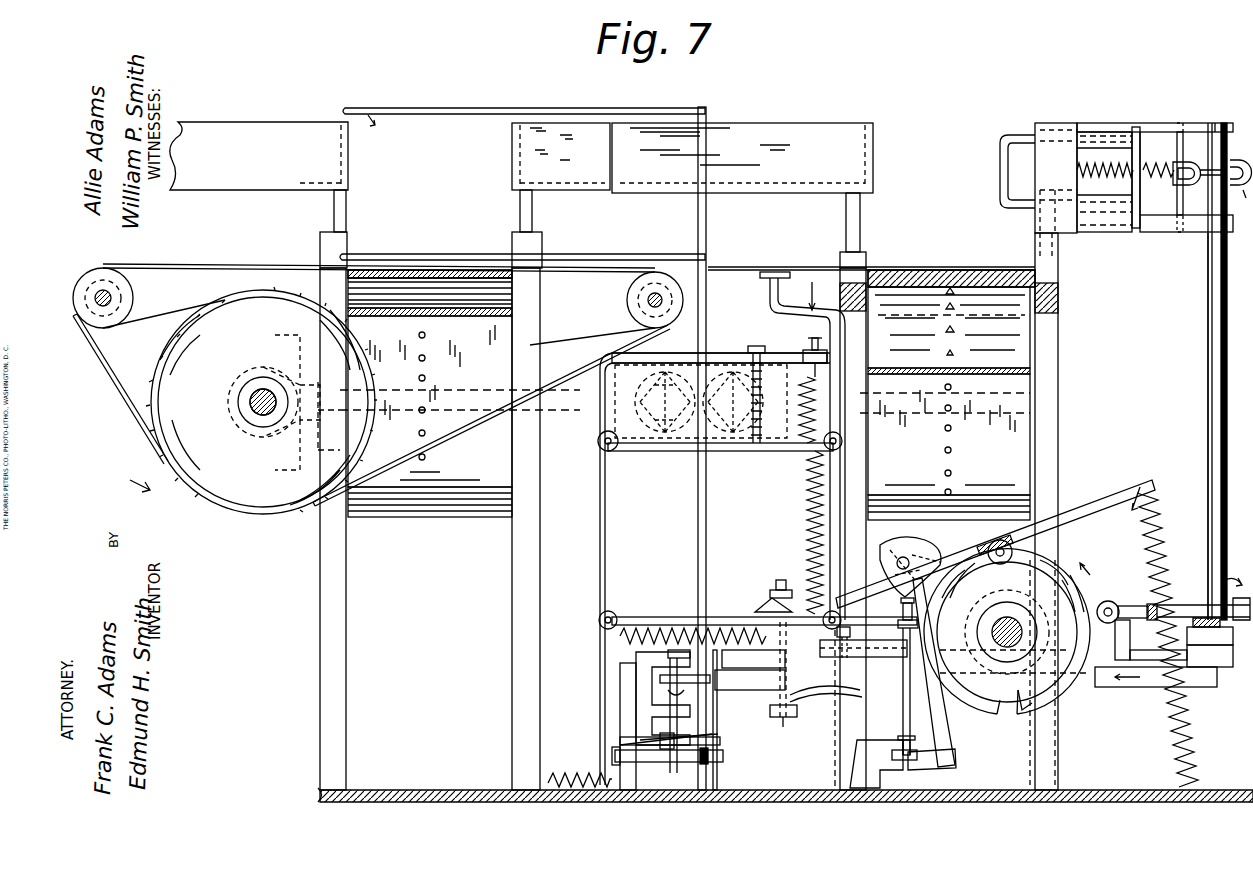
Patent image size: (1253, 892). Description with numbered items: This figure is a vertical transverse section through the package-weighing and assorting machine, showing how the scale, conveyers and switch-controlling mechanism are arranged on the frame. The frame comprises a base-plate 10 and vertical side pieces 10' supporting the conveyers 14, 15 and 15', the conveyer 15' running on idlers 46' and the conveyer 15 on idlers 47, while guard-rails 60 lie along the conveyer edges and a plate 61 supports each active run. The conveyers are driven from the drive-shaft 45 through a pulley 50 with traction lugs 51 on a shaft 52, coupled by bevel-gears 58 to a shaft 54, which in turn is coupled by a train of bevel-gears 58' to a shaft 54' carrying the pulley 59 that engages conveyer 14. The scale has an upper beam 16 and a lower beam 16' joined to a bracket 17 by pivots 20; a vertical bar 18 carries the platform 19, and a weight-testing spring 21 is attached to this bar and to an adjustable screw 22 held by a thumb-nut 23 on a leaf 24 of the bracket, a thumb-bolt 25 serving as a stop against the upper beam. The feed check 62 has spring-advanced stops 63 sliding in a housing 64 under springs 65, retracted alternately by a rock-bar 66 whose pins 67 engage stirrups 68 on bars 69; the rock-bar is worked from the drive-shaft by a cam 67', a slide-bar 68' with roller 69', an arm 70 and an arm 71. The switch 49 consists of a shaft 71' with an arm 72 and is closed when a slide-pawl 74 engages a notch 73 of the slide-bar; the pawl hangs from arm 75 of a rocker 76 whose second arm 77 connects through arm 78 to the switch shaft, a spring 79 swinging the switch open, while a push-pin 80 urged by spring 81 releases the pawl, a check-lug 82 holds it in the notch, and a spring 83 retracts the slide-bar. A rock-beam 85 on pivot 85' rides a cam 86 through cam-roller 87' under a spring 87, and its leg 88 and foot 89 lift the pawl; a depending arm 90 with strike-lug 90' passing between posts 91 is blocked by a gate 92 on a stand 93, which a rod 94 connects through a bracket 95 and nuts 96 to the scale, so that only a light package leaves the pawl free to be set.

The base-plate 10 is at (785, 784).
The vertical side pieces 10' is at (682, 490).
The conveyer 14 is at (975, 270).
The conveyer 15 is at (430, 273).
The conveyer 15' is at (430, 242).
The upper beam 16 is at (725, 454).
The lower beam 16' is at (764, 606).
The bracket 17 is at (606, 520).
The vertical bar 18 is at (770, 300).
The platform 19 is at (773, 270).
The pivots 20 is at (600, 441).
The weight-testing spring 21 is at (805, 485).
The adjustable screw 22 is at (810, 340).
The thumb-nut 23 is at (805, 380).
The leaf 24 is at (715, 358).
The thumb-bolt 25 is at (757, 345).
The drive-shaft 45 is at (1015, 615).
The idlers 46' is at (430, 269).
The idlers 47 is at (110, 292).
The switch 49 is at (706, 110).
The pulley 50 is at (248, 495).
The lugs 51 is at (165, 340).
The shaft 52 is at (250, 402).
The shaft 54 is at (460, 416).
The shaft 54' is at (977, 447).
The bevel-gears 58 is at (284, 395).
The train of bevel-gears 58' is at (701, 401).
The pulley 59 is at (1040, 355).
The guard-rails 60 is at (250, 125).
The plate 61 is at (930, 270).
The check 62 is at (1110, 128).
The stops 63 is at (1002, 140).
The housing 64 is at (1052, 130).
The springs 65 is at (1076, 175).
The rock-bar 66 is at (1206, 250).
The pins 67 is at (1241, 203).
The cam 67' is at (1070, 555).
The stirrups 68 is at (1043, 461).
The slide-bar 68' is at (1156, 688).
The bars 69 is at (1144, 189).
The roller 69' is at (1173, 613).
The arm 70 is at (1180, 605).
The arm 71 is at (1230, 371).
The shaft 71' is at (699, 482).
The arm 72 is at (640, 102).
The notch 73 is at (835, 665).
The slide-pawl 74 is at (722, 668).
The arm 75 is at (660, 690).
The rocker 76 is at (665, 676).
The second arm 77 is at (640, 742).
The arm 78 is at (720, 758).
The spring 79 is at (578, 778).
The push-pin 80 is at (837, 614).
The spring 81 is at (782, 668).
The check-lug 82 is at (830, 695).
The spring 83 is at (715, 630).
The rock-beam 85 is at (995, 544).
The pivot 85' is at (942, 559).
The cam 86 is at (995, 685).
The spring 87 is at (1167, 640).
The cam-roller 87' is at (1015, 672).
The leg 88 is at (775, 586).
The foot 89 is at (771, 704).
The depending arm 90 is at (951, 672).
The strike-lug 90' is at (951, 758).
The posts 91 is at (858, 765).
The gate 92 is at (903, 730).
The stand 93 is at (910, 762).
The rod 94 is at (903, 683).
The bracket 95 is at (900, 608).
The nuts 96 is at (897, 626).